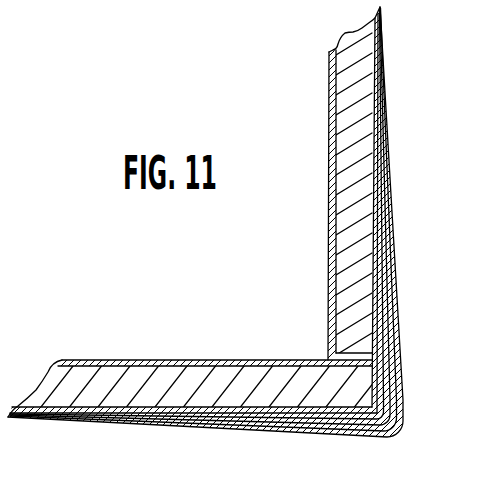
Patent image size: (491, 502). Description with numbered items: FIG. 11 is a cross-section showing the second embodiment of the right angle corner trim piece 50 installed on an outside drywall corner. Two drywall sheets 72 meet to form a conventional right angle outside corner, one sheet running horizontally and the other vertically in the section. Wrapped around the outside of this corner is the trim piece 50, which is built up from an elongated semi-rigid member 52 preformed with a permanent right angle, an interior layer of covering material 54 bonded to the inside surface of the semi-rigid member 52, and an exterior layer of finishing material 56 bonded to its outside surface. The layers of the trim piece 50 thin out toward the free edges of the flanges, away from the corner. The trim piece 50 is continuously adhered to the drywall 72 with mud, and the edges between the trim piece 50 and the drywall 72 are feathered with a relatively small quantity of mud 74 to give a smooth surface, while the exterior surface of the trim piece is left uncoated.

The right angle corner trim piece 50 is at (395, 213).
The elongated semi-rigid member 52 is at (396, 316).
The covering material 54 is at (332, 421).
The finishing material 56 is at (400, 377).
The drywall sheets 72 is at (342, 168).
The mud 74 is at (388, 82).